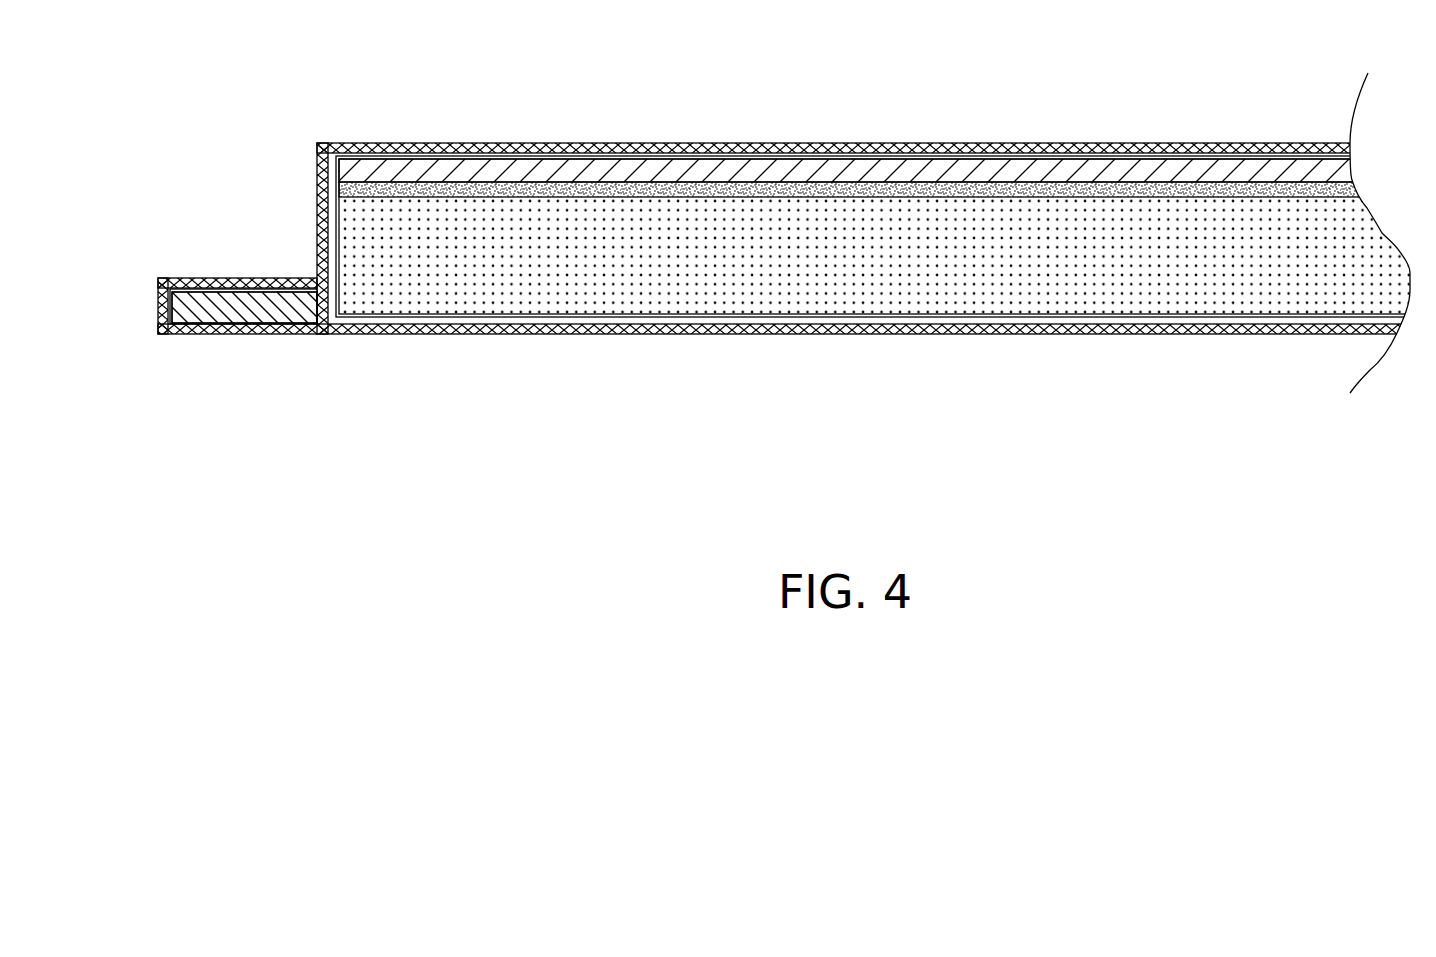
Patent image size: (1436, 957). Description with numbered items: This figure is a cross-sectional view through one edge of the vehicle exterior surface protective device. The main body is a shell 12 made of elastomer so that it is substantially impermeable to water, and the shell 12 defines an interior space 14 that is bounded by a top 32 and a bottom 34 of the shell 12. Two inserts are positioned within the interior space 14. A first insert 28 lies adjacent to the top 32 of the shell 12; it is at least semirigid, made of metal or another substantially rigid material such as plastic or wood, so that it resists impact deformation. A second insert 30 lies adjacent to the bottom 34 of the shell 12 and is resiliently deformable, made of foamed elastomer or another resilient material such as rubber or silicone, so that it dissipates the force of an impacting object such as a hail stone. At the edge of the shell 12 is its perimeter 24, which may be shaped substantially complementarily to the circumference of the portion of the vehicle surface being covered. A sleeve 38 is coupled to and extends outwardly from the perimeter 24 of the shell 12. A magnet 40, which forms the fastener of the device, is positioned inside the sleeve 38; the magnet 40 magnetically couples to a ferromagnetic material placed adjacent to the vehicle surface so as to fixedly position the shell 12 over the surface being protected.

The shell 12 is at (658, 143).
The interior space 14 is at (988, 235).
The perimeter 24 is at (313, 290).
The first insert 28 is at (803, 178).
The second insert 30 is at (772, 272).
The top 32 is at (908, 145).
The bottom 34 is at (640, 337).
The sleeve 38 is at (238, 279).
The magnet 40 is at (247, 305).